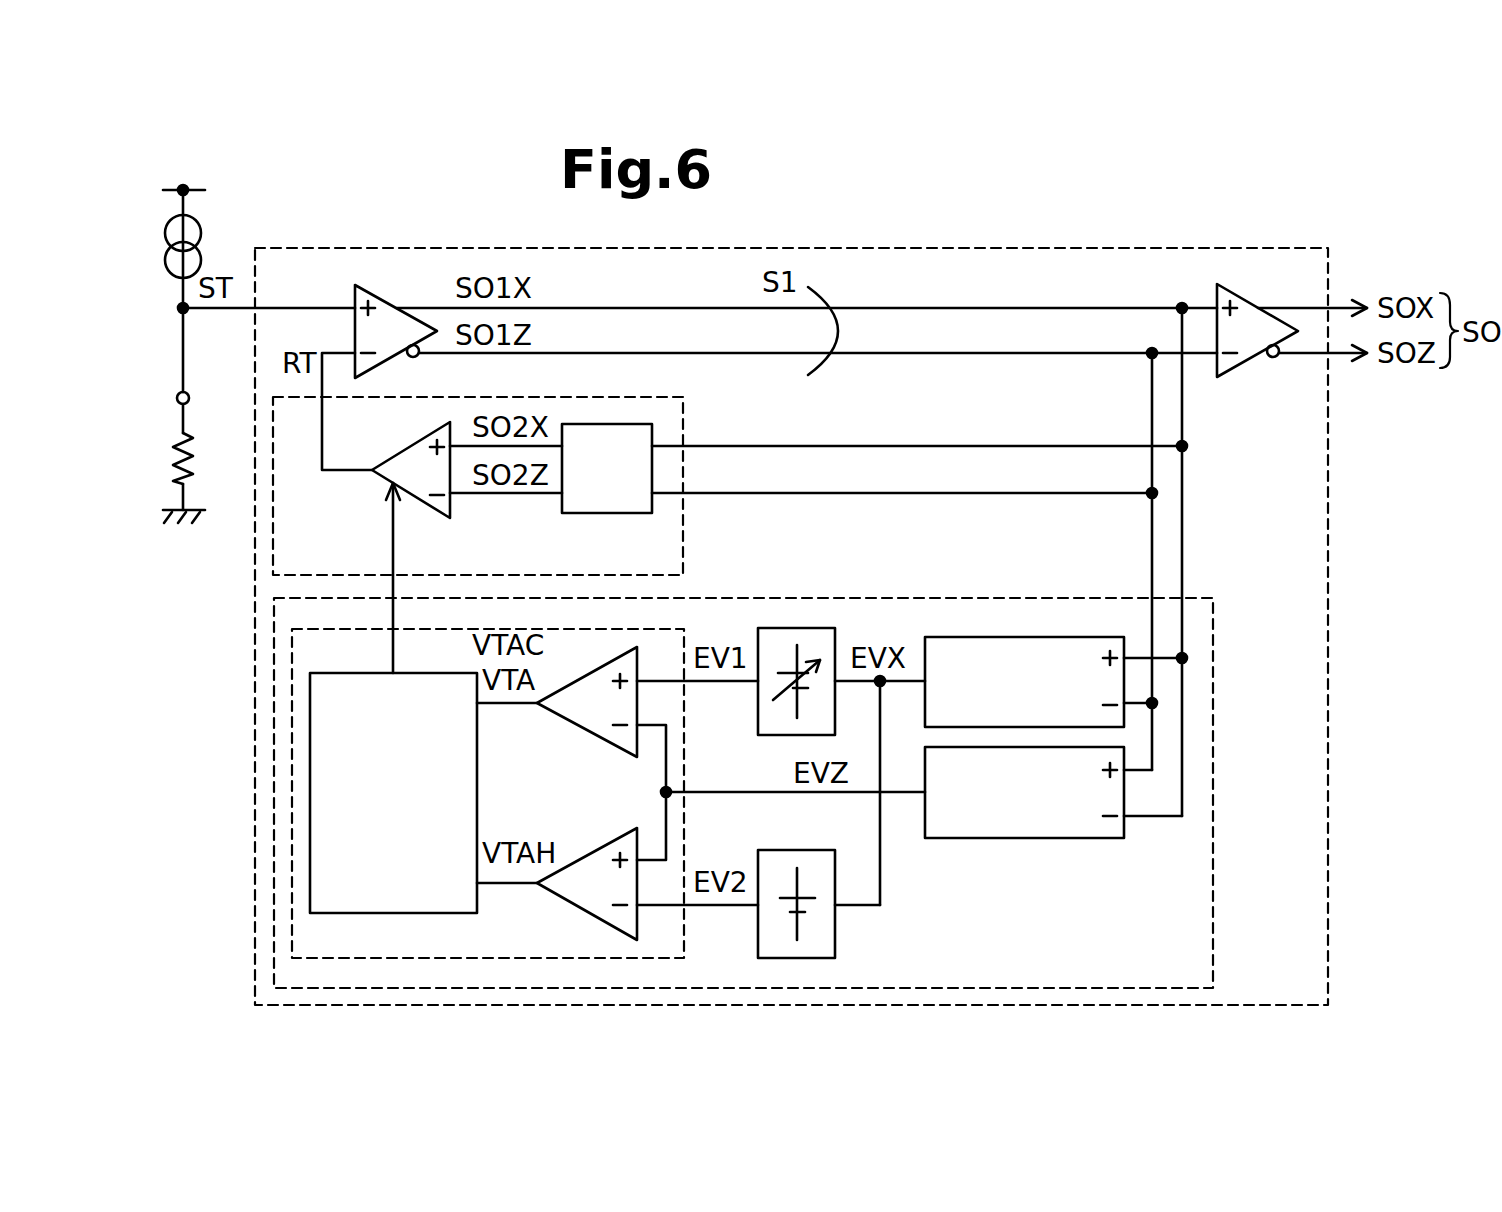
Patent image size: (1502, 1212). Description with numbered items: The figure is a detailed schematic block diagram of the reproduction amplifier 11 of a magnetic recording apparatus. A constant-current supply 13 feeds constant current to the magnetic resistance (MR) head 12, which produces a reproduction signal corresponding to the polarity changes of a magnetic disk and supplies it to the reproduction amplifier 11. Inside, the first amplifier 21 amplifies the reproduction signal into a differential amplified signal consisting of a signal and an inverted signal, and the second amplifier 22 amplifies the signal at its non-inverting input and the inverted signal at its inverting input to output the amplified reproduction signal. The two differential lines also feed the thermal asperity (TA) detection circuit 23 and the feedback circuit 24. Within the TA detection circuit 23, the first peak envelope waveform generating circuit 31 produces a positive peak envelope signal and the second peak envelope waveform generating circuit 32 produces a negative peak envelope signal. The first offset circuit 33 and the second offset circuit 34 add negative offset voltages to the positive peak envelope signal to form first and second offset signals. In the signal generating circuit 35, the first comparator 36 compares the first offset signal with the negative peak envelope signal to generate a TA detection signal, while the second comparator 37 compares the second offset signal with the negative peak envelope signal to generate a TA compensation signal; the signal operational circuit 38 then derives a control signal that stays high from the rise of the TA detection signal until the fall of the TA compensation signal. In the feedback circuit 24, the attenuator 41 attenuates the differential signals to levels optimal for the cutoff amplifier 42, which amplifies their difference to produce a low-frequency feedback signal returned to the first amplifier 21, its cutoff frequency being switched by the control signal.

The reproduction amplifier 11 is at (1020, 248).
The magnetic resistance (MR) head 12 is at (195, 446).
The constant-current supply 13 is at (203, 230).
The first amplifier 21 is at (368, 290).
The second amplifier 22 is at (1232, 290).
The thermal asperity (TA) detection circuit 23 is at (1213, 645).
The feedback circuit 24 is at (668, 397).
The first peak envelope waveform generating circuit 31 is at (1048, 637).
The second peak envelope waveform generating circuit 32 is at (1075, 838).
The first offset circuit 33 is at (758, 718).
The second offset circuit 34 is at (835, 933).
The signal generating circuit 35 is at (660, 629).
The first comparator 36 is at (574, 727).
The second comparator 37 is at (598, 856).
The signal operational circuit 38 is at (478, 768).
The attenuator 41 is at (610, 513).
The cutoff amplifier 42 is at (410, 446).